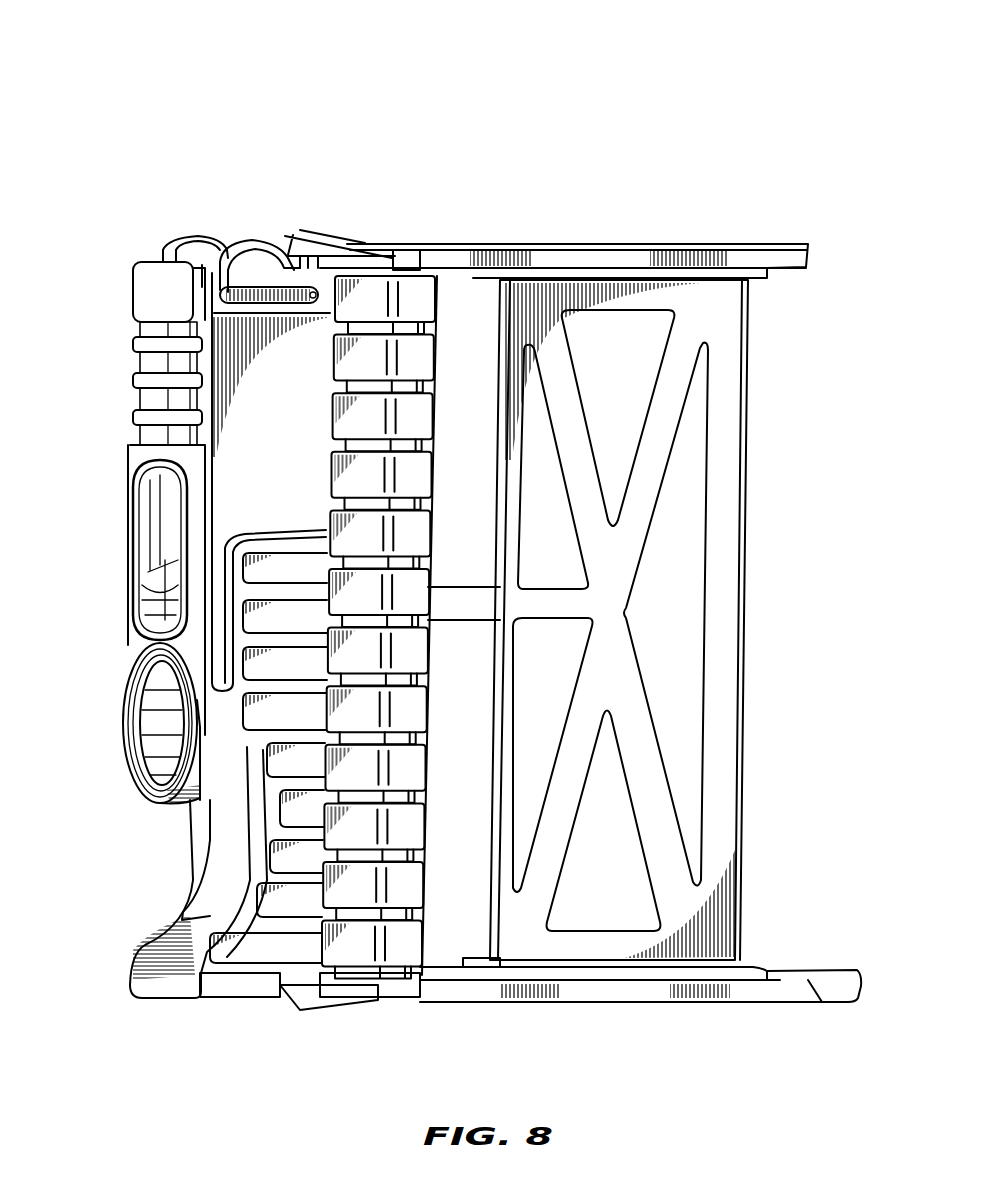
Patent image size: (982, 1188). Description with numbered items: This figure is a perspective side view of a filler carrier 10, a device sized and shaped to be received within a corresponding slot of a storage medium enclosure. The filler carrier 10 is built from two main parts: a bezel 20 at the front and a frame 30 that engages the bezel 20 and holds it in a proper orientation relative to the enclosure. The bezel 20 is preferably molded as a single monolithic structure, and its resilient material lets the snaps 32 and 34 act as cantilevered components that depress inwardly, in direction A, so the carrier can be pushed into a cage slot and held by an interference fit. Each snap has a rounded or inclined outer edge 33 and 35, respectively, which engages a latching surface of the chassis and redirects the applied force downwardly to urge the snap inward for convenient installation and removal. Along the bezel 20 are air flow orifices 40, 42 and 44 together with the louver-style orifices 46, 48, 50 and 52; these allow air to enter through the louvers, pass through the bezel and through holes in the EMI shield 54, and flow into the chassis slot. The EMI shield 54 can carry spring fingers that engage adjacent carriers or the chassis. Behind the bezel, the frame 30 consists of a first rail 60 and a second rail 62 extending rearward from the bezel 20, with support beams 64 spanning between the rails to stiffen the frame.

The filler carrier 10 is at (155, 95).
The bezel 20 is at (80, 452).
The frame 30 is at (658, 202).
The snap 32 is at (193, 240).
The inclined outer edge 33 is at (163, 262).
The snap 34 is at (262, 244).
The inclined outer edge 35 is at (300, 236).
The air flow orifice 40 is at (200, 857).
The air flow orifice 42 is at (163, 720).
The air flow orifice 44 is at (163, 515).
The air flow orifice (louver) 46 is at (140, 440).
The air flow orifice (louver) 48 is at (140, 403).
The air flow orifice (louver) 50 is at (140, 363).
The air flow orifice (louver) 52 is at (130, 322).
The EMI shield 54 is at (356, 250).
The first rail 60 is at (535, 266).
The second rail 62 is at (785, 968).
The support beam 64 is at (722, 562).